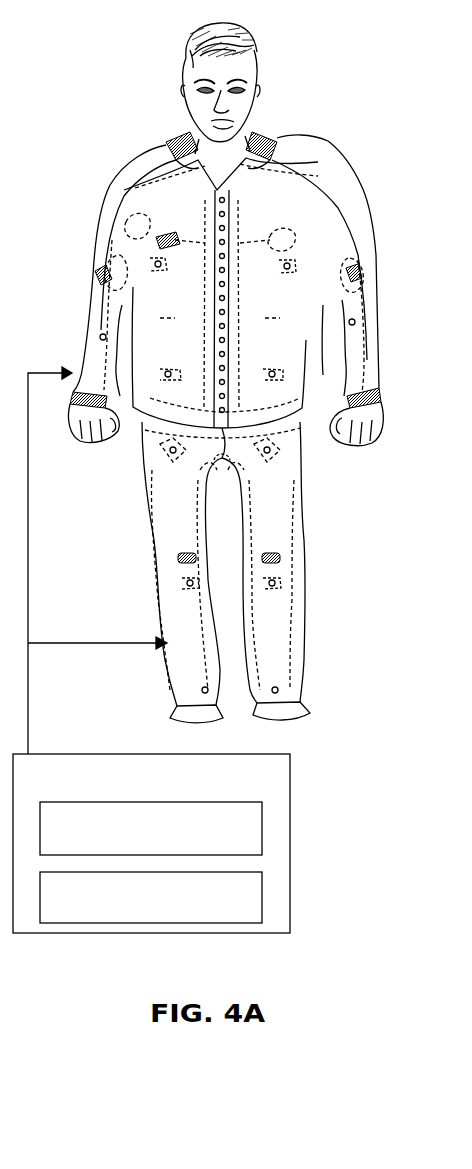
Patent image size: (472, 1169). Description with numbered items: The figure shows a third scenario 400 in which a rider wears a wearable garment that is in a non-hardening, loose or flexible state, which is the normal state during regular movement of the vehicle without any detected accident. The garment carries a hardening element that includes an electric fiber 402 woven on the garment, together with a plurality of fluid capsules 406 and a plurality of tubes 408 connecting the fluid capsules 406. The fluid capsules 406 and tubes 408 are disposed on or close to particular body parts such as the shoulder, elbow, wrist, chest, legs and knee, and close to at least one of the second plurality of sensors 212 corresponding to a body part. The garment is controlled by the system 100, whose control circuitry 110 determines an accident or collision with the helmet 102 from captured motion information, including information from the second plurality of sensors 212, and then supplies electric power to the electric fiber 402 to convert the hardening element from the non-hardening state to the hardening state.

The third scenario 400 is at (260, 88).
The electric fiber 402 is at (168, 383).
The fluid capsules 406 is at (126, 185).
The tubes 408 is at (122, 217).
The second plurality of sensors 212 is at (340, 152).
The system 100 is at (151, 650).
The control circuitry 110 is at (151, 828).
The helmet 102 is at (151, 897).